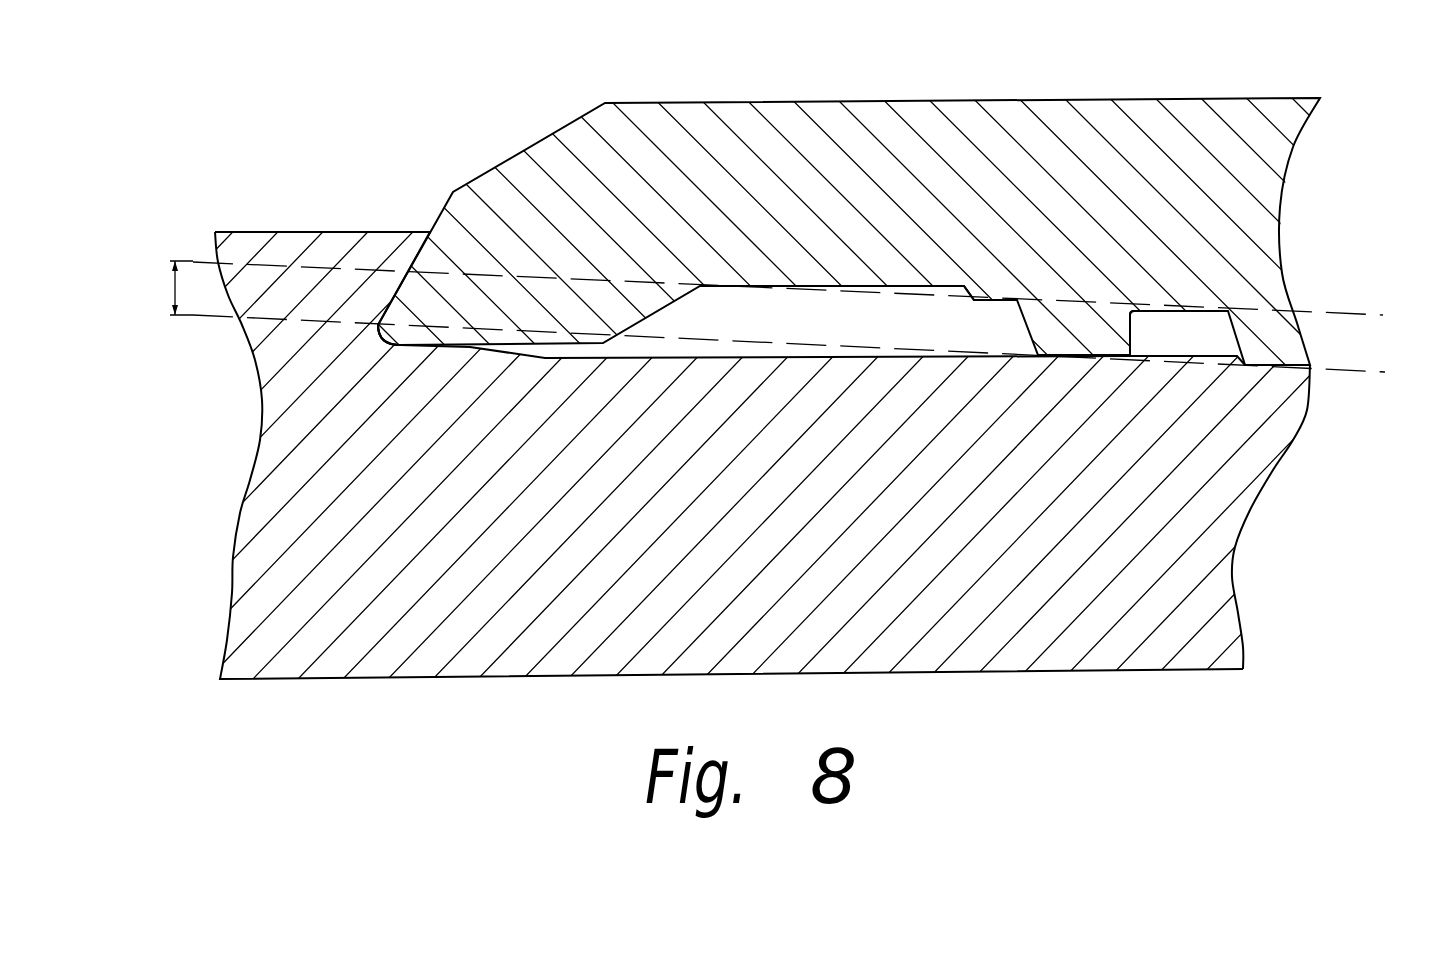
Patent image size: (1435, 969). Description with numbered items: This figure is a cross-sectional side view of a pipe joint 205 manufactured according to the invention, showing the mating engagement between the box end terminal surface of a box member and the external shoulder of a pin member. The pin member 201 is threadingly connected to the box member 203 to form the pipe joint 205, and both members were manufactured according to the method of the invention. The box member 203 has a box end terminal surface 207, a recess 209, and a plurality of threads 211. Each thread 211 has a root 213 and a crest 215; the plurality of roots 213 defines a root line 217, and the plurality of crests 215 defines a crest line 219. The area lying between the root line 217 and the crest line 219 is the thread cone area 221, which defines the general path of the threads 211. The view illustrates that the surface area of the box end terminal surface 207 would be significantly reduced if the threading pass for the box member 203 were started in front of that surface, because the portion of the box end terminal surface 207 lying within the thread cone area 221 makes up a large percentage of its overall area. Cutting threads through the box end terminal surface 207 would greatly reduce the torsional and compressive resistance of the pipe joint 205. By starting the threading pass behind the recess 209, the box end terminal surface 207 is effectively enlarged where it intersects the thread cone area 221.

The pin member 201 is at (1091, 674).
The box member 203 is at (1165, 98).
The pipe joint 205 is at (717, 364).
The box end terminal surface 207 is at (418, 246).
The recess 209 is at (936, 286).
The threads 211 is at (1133, 340).
The root 213 is at (997, 298).
The crest 215 is at (1078, 358).
The root line 217 is at (1362, 317).
The crest line 219 is at (1350, 373).
The thread cone area 221 is at (172, 283).